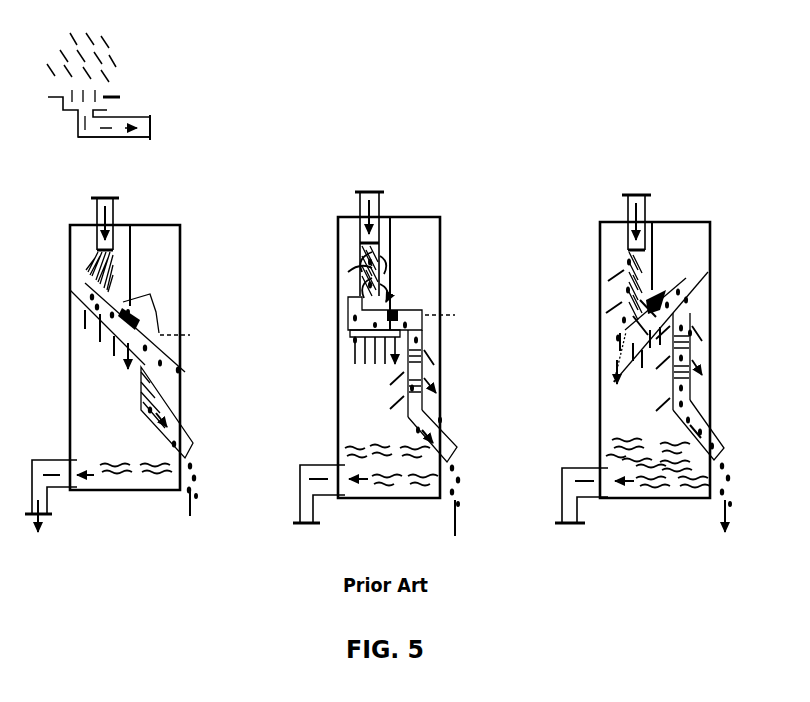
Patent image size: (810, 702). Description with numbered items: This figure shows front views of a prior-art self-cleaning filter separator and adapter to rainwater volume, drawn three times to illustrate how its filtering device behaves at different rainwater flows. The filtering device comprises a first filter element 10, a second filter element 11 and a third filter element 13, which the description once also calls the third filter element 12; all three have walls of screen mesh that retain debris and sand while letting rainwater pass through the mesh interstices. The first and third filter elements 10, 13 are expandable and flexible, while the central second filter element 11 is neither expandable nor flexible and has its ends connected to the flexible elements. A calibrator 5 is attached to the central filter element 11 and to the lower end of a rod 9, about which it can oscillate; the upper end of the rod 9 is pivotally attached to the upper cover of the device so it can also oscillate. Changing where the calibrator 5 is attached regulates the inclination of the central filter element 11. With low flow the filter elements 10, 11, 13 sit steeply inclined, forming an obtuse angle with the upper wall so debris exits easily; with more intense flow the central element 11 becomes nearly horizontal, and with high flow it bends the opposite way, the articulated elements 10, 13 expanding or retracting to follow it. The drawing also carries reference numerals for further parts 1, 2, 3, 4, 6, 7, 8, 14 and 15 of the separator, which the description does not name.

The bulk material feed 1 is at (98, 38).
The feed channel 2 is at (110, 108).
The conveyor duct 3 is at (95, 139).
The inlet 4 is at (96, 214).
The calibrator 5 is at (118, 312).
The housing 6 is at (110, 355).
The liquid outlet 7 is at (32, 458).
The housing top 8 is at (155, 225).
The rod 9 is at (133, 250).
The first filter element 10 is at (112, 280).
The second filter element 11 is at (150, 296).
The third filter element 12 is at (183, 365).
The third filter element 13 is at (165, 395).
The chute outlet 14 is at (192, 440).
The discharge stream 15 is at (200, 472).